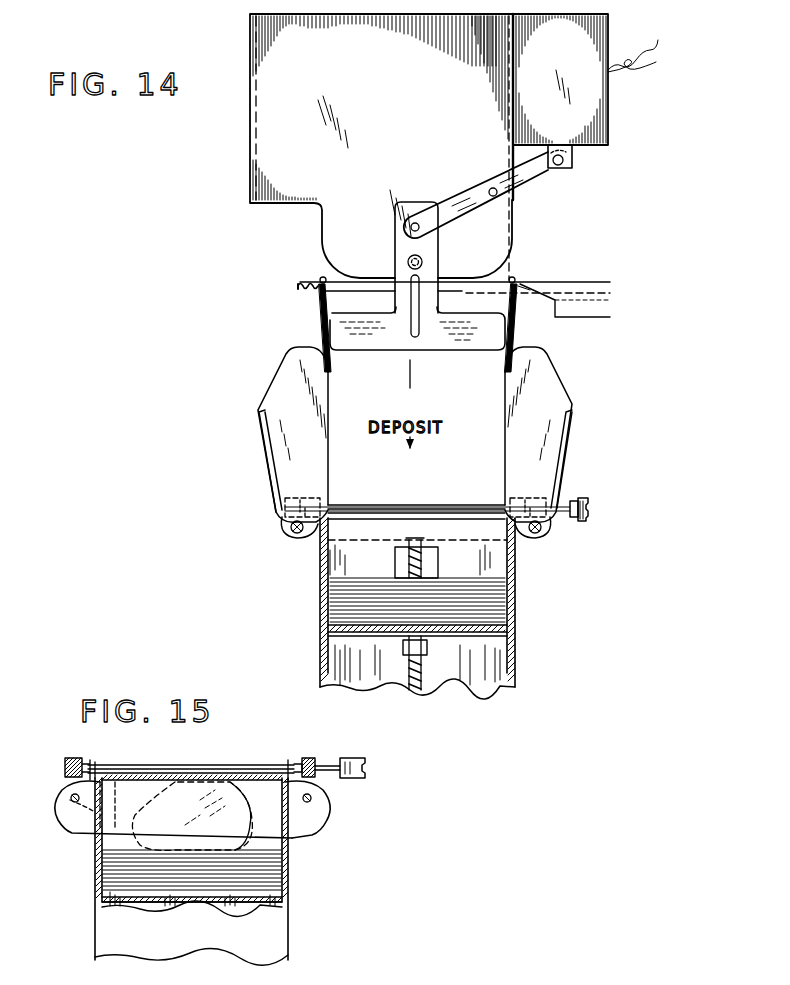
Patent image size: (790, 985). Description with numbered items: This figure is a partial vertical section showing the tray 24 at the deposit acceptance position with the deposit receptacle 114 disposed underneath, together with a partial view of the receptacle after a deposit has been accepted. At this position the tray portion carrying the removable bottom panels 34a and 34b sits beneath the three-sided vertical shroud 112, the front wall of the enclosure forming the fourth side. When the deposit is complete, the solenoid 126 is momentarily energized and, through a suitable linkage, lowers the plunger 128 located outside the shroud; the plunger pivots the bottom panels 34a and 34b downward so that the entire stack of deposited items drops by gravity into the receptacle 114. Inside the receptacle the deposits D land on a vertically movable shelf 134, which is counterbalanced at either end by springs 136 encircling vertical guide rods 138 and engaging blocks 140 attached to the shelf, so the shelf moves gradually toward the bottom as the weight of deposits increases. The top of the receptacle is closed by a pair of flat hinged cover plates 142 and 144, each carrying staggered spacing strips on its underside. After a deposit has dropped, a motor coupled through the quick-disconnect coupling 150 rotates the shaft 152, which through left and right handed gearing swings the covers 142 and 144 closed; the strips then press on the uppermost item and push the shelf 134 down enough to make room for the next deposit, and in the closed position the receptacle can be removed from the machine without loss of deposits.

In FIG. 14, the three-sided vertical shroud 112 is at (388, 84).
In FIG. 14, the solenoid 126 is at (588, 100).
In FIG. 14, the tray 24 is at (300, 278).
In FIG. 14, the removable bottom panel 34a is at (516, 325).
In FIG. 14, the removable bottom panel 34b is at (318, 326).
In FIG. 14, the plunger 128 is at (473, 345).
In FIG. 14, the cover plate 144 is at (262, 430).
In FIG. 15, the cover plate 144 is at (143, 768).
In FIG. 14, the cover plate 142 is at (572, 424).
In FIG. 15, the cover plate 142 is at (243, 767).
In FIG. 14, the rotating shaft 152 is at (438, 504).
In FIG. 15, the rotating shaft 152 is at (203, 767).
In FIG. 14, the coupling 150 is at (588, 500).
In FIG. 15, the coupling 150 is at (365, 768).
In FIG. 14, the deposit receptacle 114 is at (520, 596).
In FIG. 14, the deposits D is at (488, 585).
In FIG. 15, the deposits D is at (268, 868).
In FIG. 14, the vertically movable shelf 134 is at (513, 634).
In FIG. 15, the vertically movable shelf 134 is at (262, 900).
In FIG. 14, the springs 136 is at (428, 688).
In FIG. 14, the vertical guide rods 138 is at (410, 690).
In FIG. 14, the blocks 140 is at (420, 645).